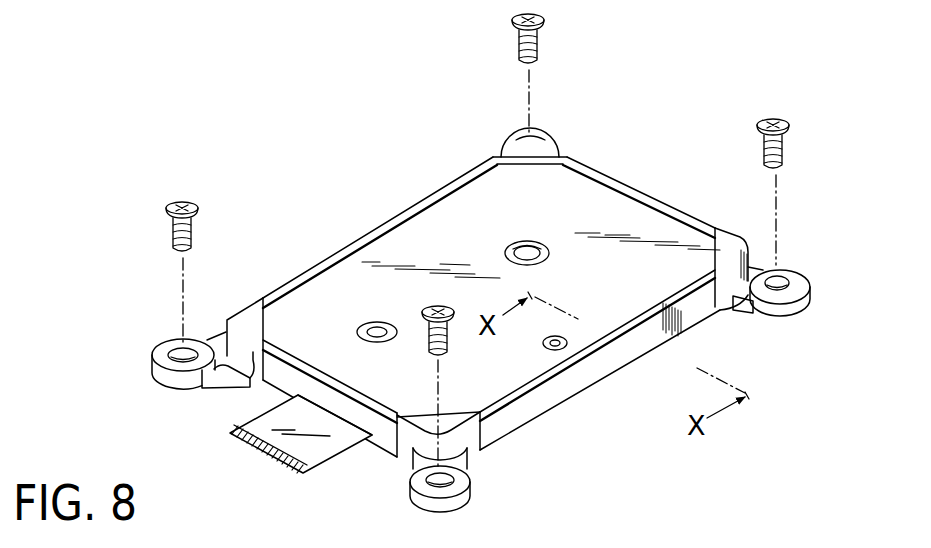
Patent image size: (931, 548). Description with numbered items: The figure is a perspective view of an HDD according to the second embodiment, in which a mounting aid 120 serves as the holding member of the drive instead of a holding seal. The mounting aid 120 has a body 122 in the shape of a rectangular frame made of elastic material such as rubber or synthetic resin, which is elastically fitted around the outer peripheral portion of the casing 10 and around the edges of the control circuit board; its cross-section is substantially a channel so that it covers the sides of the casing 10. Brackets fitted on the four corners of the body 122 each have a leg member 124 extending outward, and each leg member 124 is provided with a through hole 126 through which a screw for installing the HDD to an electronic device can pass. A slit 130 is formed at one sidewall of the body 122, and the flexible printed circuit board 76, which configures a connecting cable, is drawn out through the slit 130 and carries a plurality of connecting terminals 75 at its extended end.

The casing 10 is at (487, 300).
The connecting terminals 75 is at (257, 450).
The flexible printed circuit board 76 is at (325, 438).
The mounting aid 120 is at (359, 227).
The body 122 is at (583, 378).
The leg member 124 is at (553, 133).
The through hole 126 is at (788, 282).
The slit 130 is at (322, 405).